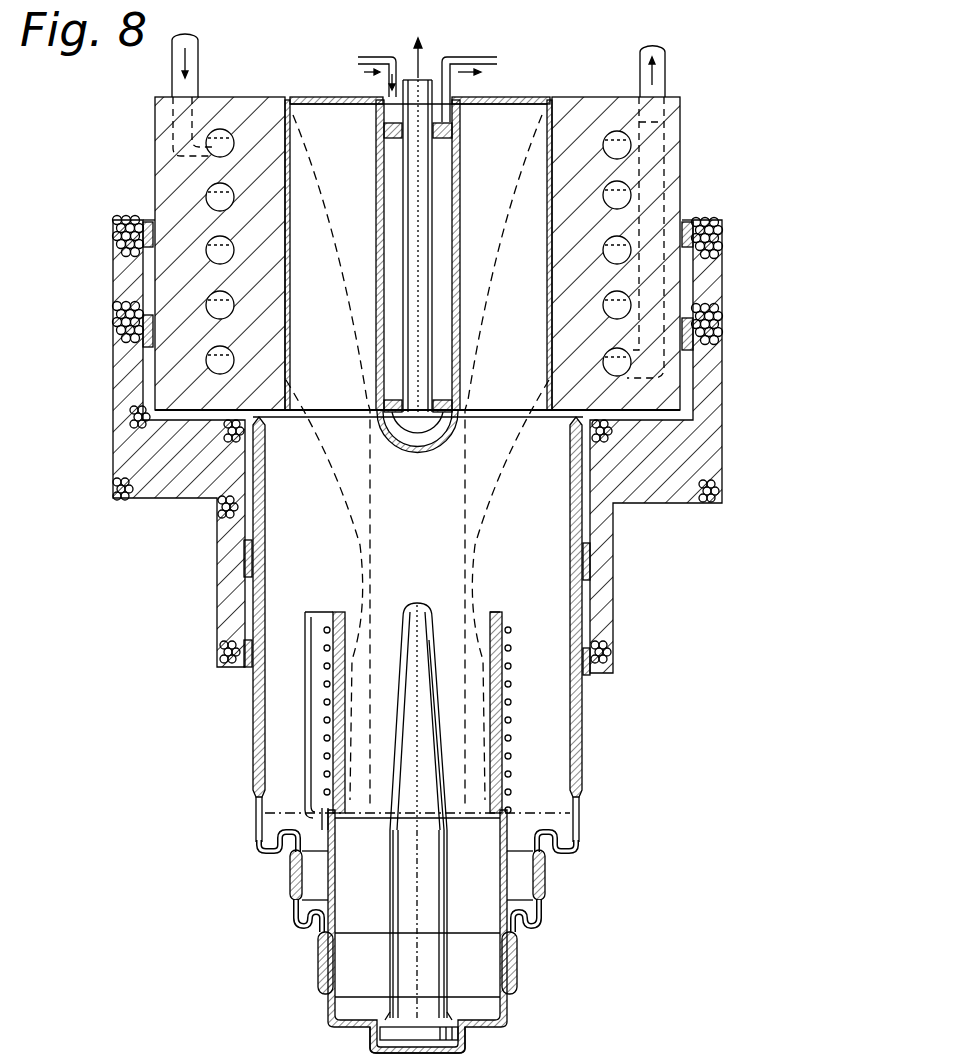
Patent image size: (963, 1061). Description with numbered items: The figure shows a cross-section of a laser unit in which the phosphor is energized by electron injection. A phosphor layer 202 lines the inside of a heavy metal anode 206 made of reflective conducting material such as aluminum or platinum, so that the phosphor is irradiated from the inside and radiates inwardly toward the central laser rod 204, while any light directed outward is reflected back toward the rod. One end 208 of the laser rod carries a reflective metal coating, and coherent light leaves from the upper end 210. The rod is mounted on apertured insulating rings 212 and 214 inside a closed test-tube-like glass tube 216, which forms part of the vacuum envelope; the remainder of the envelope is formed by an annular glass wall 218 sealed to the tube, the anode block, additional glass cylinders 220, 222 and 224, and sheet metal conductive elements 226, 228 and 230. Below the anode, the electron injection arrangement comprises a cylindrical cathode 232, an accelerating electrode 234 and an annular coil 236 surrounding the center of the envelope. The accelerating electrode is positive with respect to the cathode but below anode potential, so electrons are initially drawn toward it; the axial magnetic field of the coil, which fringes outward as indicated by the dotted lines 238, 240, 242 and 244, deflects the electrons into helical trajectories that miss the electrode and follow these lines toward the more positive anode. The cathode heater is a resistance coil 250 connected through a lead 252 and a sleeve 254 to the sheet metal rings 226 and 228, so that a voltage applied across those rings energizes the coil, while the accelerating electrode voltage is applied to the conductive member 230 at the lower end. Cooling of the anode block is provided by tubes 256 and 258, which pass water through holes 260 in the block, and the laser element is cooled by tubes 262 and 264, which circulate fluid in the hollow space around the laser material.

The phosphor material 202 is at (546, 346).
The laser rod 204 is at (428, 95).
The heavy metal anode 206 is at (664, 228).
The end of the laser rod 208 is at (418, 442).
The upper end of the laser rod 210 is at (414, 60).
The apertured insulating ring 212 is at (387, 130).
The apertured insulating ring 214 is at (386, 405).
The closed tube of glass 216 is at (462, 240).
The annular glass wall 218 is at (506, 101).
The glass cylinder 220 is at (253, 766).
The glass cylinder 222 is at (289, 874).
The glass cylinder 224 is at (318, 962).
The sheet metal conductive element 226 is at (266, 852).
The sheet metal conductive element 228 is at (297, 924).
The sheet metal conductive element 230 is at (352, 1030).
The cylindrical cathode 232 is at (500, 612).
The accelerating electrode 234 is at (422, 622).
The annular coil 236 is at (722, 378).
The dotted line 238 is at (352, 498).
The dotted line 240 is at (356, 296).
The dotted line 242 is at (480, 526).
The dotted line 244 is at (462, 530).
The resistance coil 250 is at (510, 652).
The lead 252 is at (307, 706).
The sleeve 254 is at (336, 887).
The tube 256 is at (172, 70).
The tube 258 is at (667, 74).
The holes 260 is at (208, 236).
The tube 262 is at (380, 57).
The tube 264 is at (476, 58).